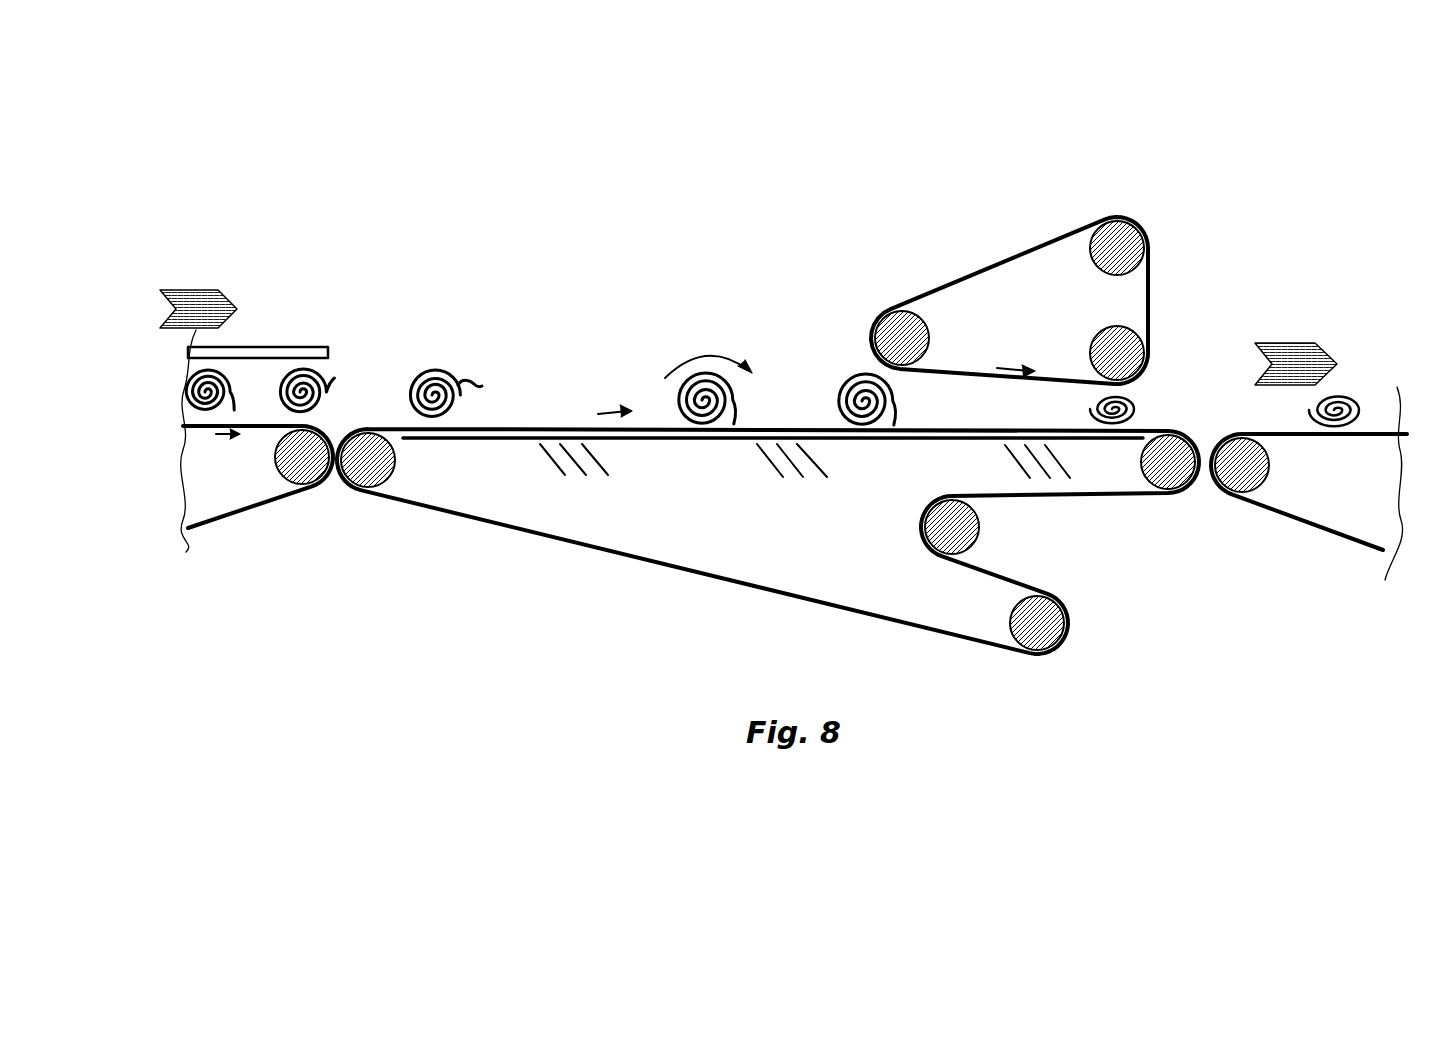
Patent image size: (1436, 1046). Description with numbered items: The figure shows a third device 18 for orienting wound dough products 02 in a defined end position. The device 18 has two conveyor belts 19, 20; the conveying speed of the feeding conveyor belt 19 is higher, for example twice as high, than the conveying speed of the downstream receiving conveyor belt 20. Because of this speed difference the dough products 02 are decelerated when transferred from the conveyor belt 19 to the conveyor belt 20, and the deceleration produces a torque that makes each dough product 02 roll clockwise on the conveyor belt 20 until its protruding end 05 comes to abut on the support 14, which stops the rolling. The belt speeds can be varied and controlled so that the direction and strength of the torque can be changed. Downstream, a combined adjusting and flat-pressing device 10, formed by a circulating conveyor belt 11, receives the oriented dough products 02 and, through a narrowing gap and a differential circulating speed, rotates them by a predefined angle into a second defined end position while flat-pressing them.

The dough product 02 is at (413, 383).
The protruding end 05 is at (478, 376).
The combined adjusting and flat-pressing device 10 is at (976, 214).
The conveyor belt 11 is at (1153, 310).
The support 14 is at (775, 418).
The third device 18 is at (1269, 99).
The conveyor belt 19 is at (228, 515).
The conveyor belt 20 is at (579, 542).